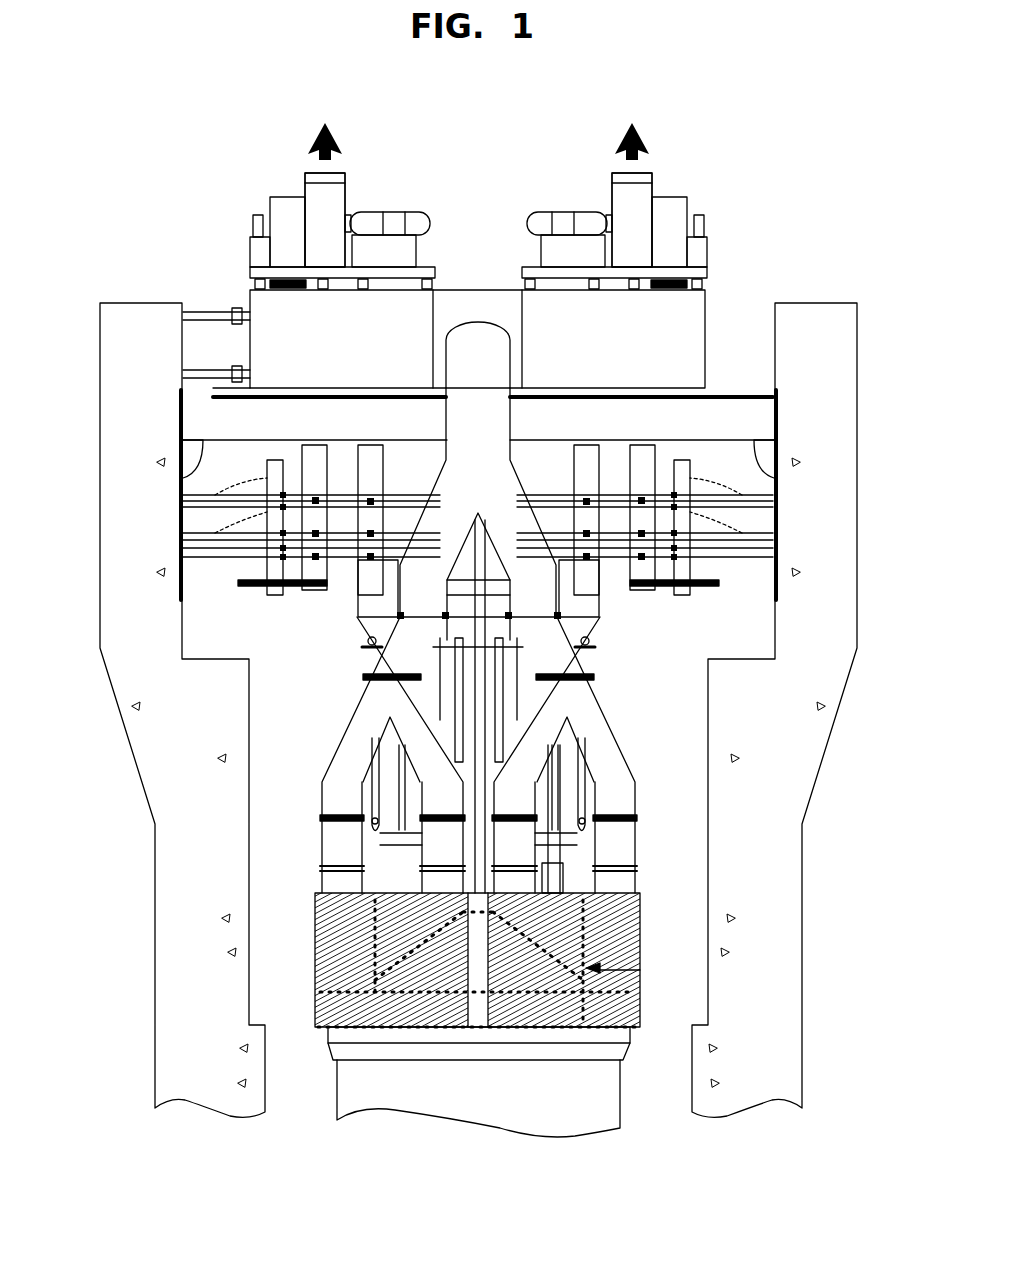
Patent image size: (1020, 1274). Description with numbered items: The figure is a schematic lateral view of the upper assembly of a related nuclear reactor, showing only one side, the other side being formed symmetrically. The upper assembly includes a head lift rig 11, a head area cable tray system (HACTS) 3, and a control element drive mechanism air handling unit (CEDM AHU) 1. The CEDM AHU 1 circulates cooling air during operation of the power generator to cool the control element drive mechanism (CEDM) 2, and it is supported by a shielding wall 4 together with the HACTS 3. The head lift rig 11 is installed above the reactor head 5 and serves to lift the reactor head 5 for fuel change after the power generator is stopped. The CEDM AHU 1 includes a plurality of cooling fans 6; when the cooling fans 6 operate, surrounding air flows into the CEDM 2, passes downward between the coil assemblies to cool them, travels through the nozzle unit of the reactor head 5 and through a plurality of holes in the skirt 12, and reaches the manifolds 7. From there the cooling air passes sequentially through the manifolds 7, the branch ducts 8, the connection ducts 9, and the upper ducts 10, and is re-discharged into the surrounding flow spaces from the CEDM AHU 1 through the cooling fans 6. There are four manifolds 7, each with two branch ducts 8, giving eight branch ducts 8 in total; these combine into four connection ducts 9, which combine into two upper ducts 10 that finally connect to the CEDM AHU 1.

The control element drive mechanism air handling unit (CEDM AHU) 1 is at (697, 320).
The control element drive mechanism (CEDM) 2 is at (483, 703).
The head area cable tray system (HACTS) 3 is at (698, 528).
The shielding wall 4 is at (113, 445).
The reactor head 5 is at (343, 1007).
The cooling fan 6 is at (335, 197).
The manifold 7 is at (640, 998).
The branch duct 8 is at (437, 855).
The connection duct 9 is at (347, 753).
The upper duct 10 is at (440, 532).
The head lift rig 11 is at (377, 795).
The skirt 12 is at (570, 877).